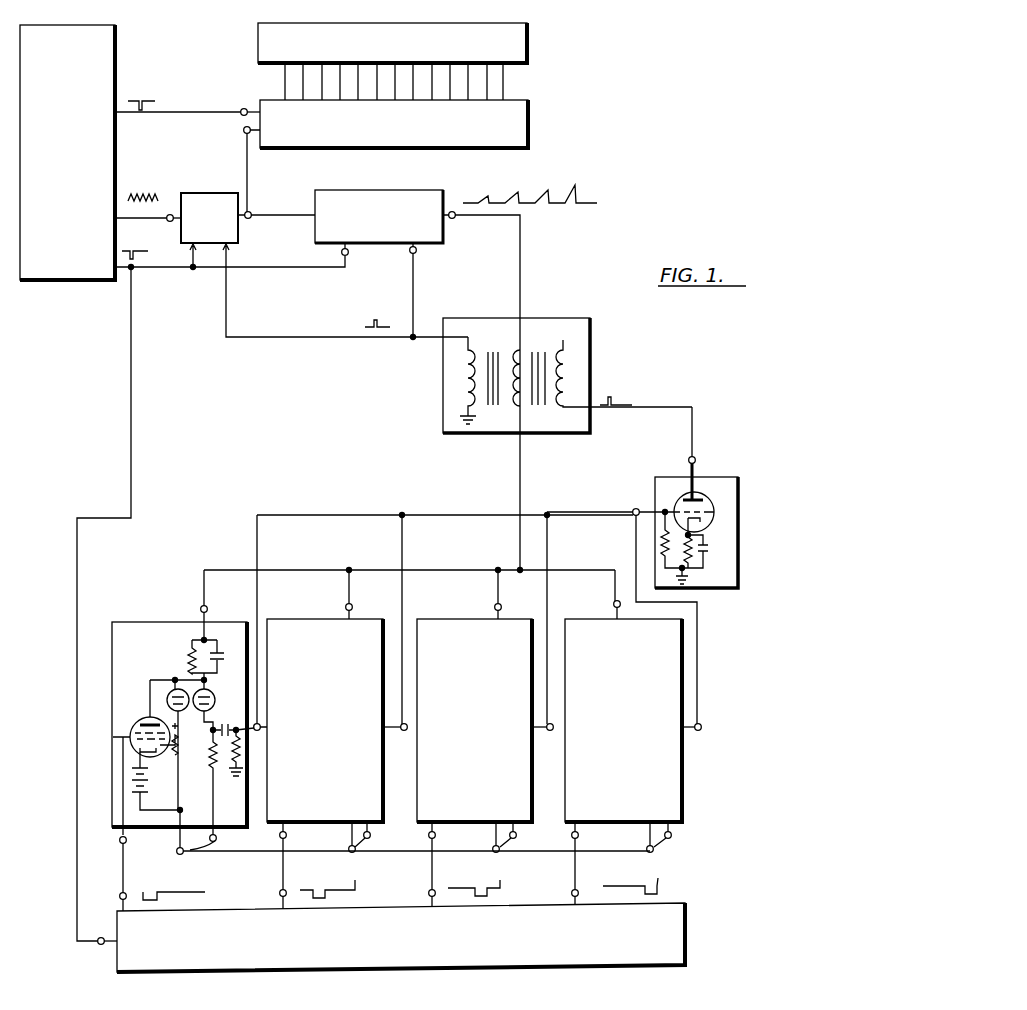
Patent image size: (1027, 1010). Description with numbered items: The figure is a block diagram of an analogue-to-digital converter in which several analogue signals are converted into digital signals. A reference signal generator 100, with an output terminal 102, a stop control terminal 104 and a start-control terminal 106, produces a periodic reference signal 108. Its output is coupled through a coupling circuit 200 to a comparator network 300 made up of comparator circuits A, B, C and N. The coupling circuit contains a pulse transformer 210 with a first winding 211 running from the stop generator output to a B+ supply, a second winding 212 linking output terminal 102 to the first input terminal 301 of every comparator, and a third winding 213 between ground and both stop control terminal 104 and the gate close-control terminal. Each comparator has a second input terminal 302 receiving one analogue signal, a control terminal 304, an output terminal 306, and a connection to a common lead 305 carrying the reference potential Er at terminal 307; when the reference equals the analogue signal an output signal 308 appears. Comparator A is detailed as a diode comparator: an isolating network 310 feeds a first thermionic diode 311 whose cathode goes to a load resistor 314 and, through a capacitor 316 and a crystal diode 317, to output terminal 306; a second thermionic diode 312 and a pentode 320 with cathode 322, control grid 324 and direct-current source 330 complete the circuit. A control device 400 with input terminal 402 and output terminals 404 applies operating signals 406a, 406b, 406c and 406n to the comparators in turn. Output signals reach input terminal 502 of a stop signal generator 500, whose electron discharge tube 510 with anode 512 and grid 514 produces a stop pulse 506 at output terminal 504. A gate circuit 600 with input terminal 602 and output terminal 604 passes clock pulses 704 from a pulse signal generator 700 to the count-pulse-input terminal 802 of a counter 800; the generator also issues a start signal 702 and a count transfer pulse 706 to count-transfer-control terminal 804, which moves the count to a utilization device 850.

The reference signal generator 100 is at (400, 190).
The output terminal 102 is at (453, 210).
The stop control terminal 104 is at (416, 252).
The start-control terminal 106 is at (348, 254).
The reference signal 108 is at (585, 200).
The coupling circuit 200 is at (556, 318).
The pulse transformer 210 is at (556, 432).
The first winding 211 is at (575, 368).
The second winding 212 is at (522, 350).
The third winding 213 is at (468, 396).
The comparator network 300 is at (382, 556).
The first input terminal 301 is at (208, 604).
The second input terminal 302 is at (210, 830).
The control terminal 304 is at (120, 844).
The common lead 305 is at (310, 837).
The output terminal 306 is at (260, 730).
The reference input terminal Er 307 is at (180, 855).
The output signal 308 is at (252, 743).
The isolating network 310 is at (168, 653).
The first thermionic diode 311 is at (214, 692).
The second thermionic diode 312 is at (170, 690).
The load resistor 314 is at (210, 758).
The capacitor 316 is at (238, 710).
The crystal diode 317 is at (226, 722).
The pentode 320 is at (135, 722).
The cathode 322 is at (148, 766).
The control grid 324 is at (113, 737).
The source of direct-current potential 330 is at (133, 792).
The control device 400 is at (220, 960).
The input terminal 402 is at (112, 920).
The output terminal 404 is at (126, 893).
The operating signal 406a is at (205, 892).
The operating signal 406b is at (355, 880).
The operating signal 406c is at (500, 880).
The operating signal 406n is at (658, 878).
The stop signal generator 500 is at (738, 529).
The input terminal 502 is at (634, 516).
The output terminal 504 is at (697, 460).
The stop pulse 506 is at (378, 319).
The electron discharge tube 510 is at (708, 540).
The anode electrode 512 is at (700, 492).
The grid electrode 514 is at (712, 500).
The gate circuit 600 is at (230, 175).
The input terminal 602 is at (171, 222).
The output terminal 604 is at (251, 213).
The pulse signal generator 700 is at (100, 163).
The start signal 702 is at (133, 250).
The clock pulses 704 is at (158, 197).
The count transfer pulse 706 is at (148, 100).
The counter 800 is at (518, 130).
The count-pulse-input terminal 802 is at (244, 131).
The count-transfer-control terminal 804 is at (258, 92).
The utilization device 850 is at (520, 48).